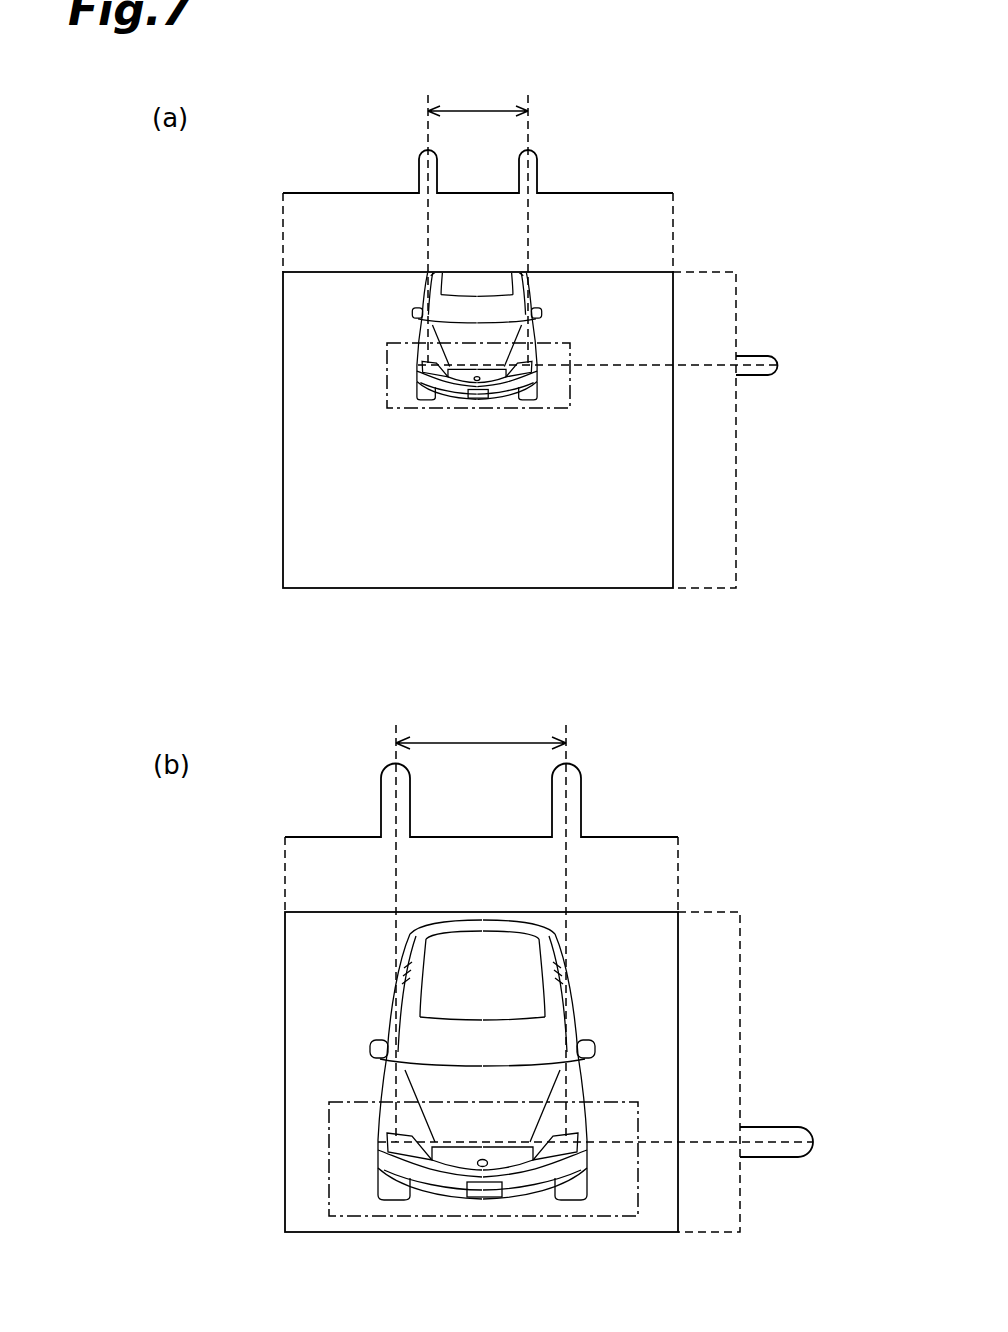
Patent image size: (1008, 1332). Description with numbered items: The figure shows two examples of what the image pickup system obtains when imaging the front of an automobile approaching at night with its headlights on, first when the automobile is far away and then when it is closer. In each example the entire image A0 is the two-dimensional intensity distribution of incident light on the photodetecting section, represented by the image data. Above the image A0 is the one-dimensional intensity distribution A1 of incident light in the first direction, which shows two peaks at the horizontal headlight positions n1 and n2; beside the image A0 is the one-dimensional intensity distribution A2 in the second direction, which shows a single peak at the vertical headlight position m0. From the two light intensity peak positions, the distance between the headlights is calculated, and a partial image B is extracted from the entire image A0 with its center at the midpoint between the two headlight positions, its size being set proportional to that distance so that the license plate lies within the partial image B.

The image A0 is at (347, 588).
The one-dimensional intensity distribution of incident light in the first direction A1 is at (597, 193).
The one-dimensional intensity distribution of incident light in the second direction A2 is at (736, 498).
The partial image B is at (413, 408).
The light intensity peak position in the second direction m0 is at (595, 745).
The first light intensity peak position in the first direction n1 is at (431, 618).
The second light intensity peak position in the first direction n2 is at (565, 618).